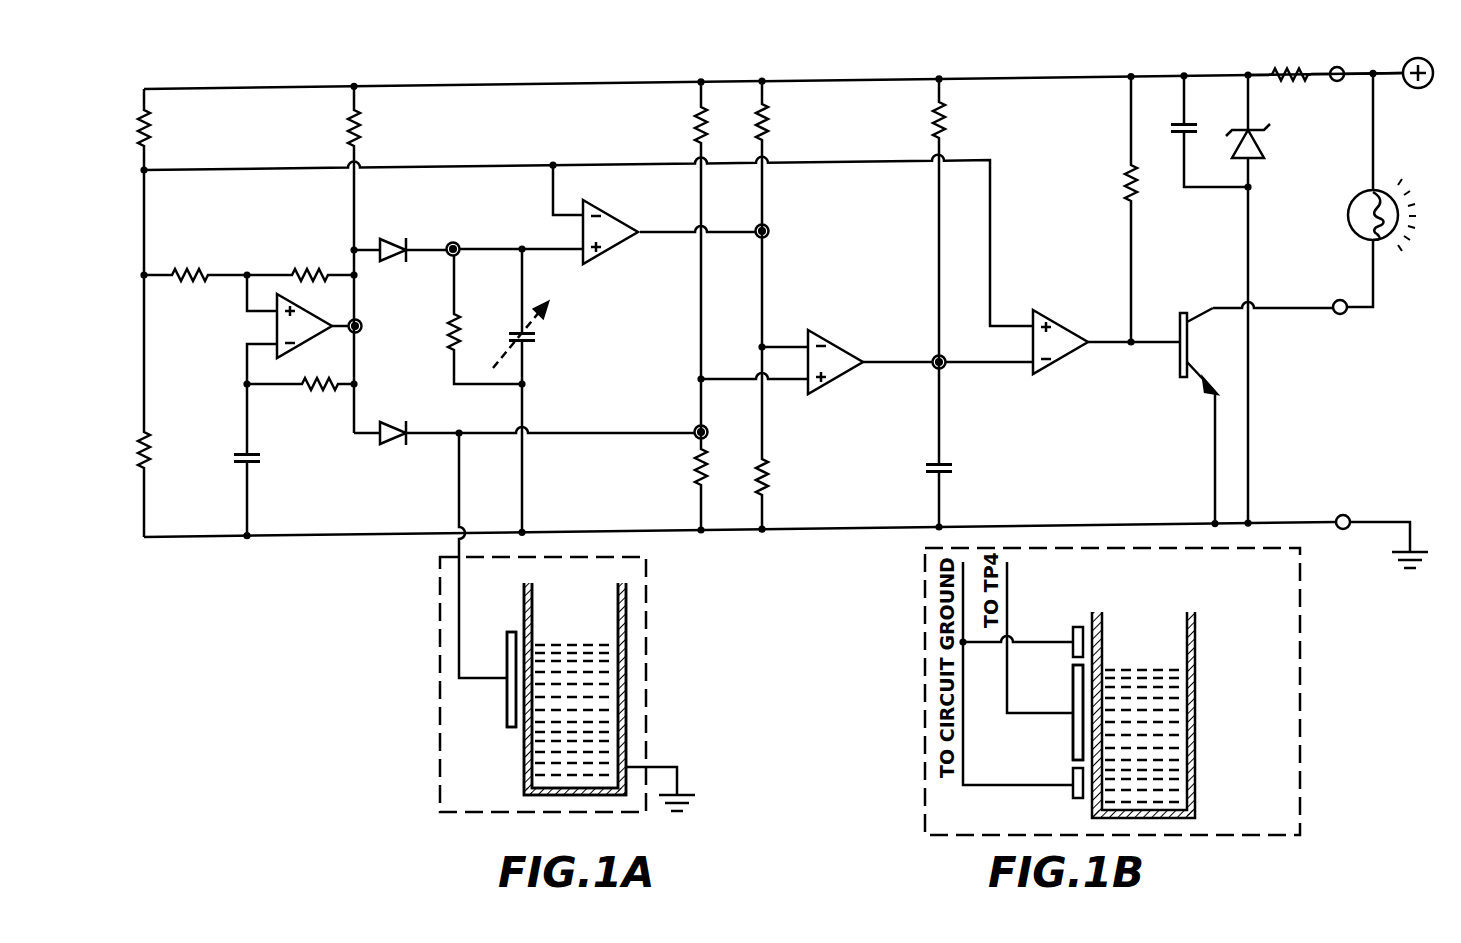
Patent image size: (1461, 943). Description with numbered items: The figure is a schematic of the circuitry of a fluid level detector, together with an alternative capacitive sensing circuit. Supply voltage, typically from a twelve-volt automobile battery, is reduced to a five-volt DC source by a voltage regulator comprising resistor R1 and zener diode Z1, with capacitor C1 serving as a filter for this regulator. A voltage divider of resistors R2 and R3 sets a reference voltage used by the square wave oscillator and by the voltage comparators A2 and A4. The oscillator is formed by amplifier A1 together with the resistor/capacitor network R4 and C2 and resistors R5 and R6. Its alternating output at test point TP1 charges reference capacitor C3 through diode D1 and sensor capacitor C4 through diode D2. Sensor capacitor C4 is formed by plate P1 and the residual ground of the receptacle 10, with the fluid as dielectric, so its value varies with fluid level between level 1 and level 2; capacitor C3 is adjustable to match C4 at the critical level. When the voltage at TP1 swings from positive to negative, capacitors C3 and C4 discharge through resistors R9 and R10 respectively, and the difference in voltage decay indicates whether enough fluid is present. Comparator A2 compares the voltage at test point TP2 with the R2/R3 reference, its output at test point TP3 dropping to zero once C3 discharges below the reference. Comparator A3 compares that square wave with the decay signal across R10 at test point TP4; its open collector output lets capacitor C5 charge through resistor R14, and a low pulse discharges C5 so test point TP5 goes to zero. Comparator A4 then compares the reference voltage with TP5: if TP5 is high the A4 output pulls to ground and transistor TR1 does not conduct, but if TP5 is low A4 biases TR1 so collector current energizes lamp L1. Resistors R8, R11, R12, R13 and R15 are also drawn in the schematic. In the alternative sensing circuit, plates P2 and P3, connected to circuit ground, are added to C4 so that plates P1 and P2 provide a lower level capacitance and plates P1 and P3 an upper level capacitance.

In FIG. 1A, the resistor R1 is at (1290, 62).
In FIG. 1A, the resistor R2 is at (164, 128).
In FIG. 1A, the resistor R3 is at (163, 450).
In FIG. 1A, the resistor R4 is at (320, 397).
In FIG. 1A, the resistor R5 is at (190, 262).
In FIG. 1A, the resistor R6 is at (310, 262).
In FIG. 1A, the resistor R8 is at (373, 128).
In FIG. 1A, the resistor R9 is at (471, 332).
In FIG. 1A, the resistor R10 is at (676, 467).
In FIG. 1A, the resistor R11 is at (676, 125).
In FIG. 1A, the resistor R12 is at (789, 122).
In FIG. 1A, the resistor R13 is at (789, 477).
In FIG. 1A, the resistor R14 is at (965, 120).
In FIG. 1A, the resistor R15 is at (1110, 183).
In FIG. 1A, the capacitor C1 is at (1198, 115).
In FIG. 1A, the capacitor C2 is at (263, 474).
In FIG. 1A, the reference capacitor C3 is at (535, 335).
In FIG. 1A, the sensor capacitor C4 is at (489, 679).
In FIG. 1B, the sensor capacitor C4 is at (1048, 712).
In FIG. 1A, the capacitor C5 is at (960, 471).
In FIG. 1A, the diode D1 is at (394, 234).
In FIG. 1A, the diode D2 is at (394, 418).
In FIG. 1A, the amplifier A1 is at (313, 330).
In FIG. 1A, the voltage comparator A2 is at (617, 241).
In FIG. 1A, the comparator A3 is at (841, 372).
In FIG. 1A, the comparator A4 is at (1071, 347).
In FIG. 1A, the test point TP1 is at (410, 353).
In FIG. 1A, the test point TP2 is at (490, 241).
In FIG. 1A, the test point TP3 is at (816, 223).
In FIG. 1A, the test point TP4 is at (726, 429).
In FIG. 1A, the test point TP5 is at (992, 403).
In FIG. 1A, the zener diode Z1 is at (1264, 144).
In FIG. 1A, the lamp L1 is at (1364, 215).
In FIG. 1A, the transistor TR1 is at (1211, 351).
In FIG. 1A, the plate P1 is at (496, 679).
In FIG. 1B, the plate P1 is at (1062, 712).
In FIG. 1A, the plate P2 is at (554, 692).
In FIG. 1B, the plate P2 is at (1060, 793).
In FIG. 1B, the plate P3 is at (1060, 635).
In FIG. 1A, the receptacle 10 is at (621, 690).
In FIG. 1A, the liquid level 1 is at (628, 653).
In FIG. 1B, the liquid level 1 is at (1198, 677).
In FIG. 1A, the liquid level 2 is at (628, 728).
In FIG. 1B, the liquid level 2 is at (1198, 767).